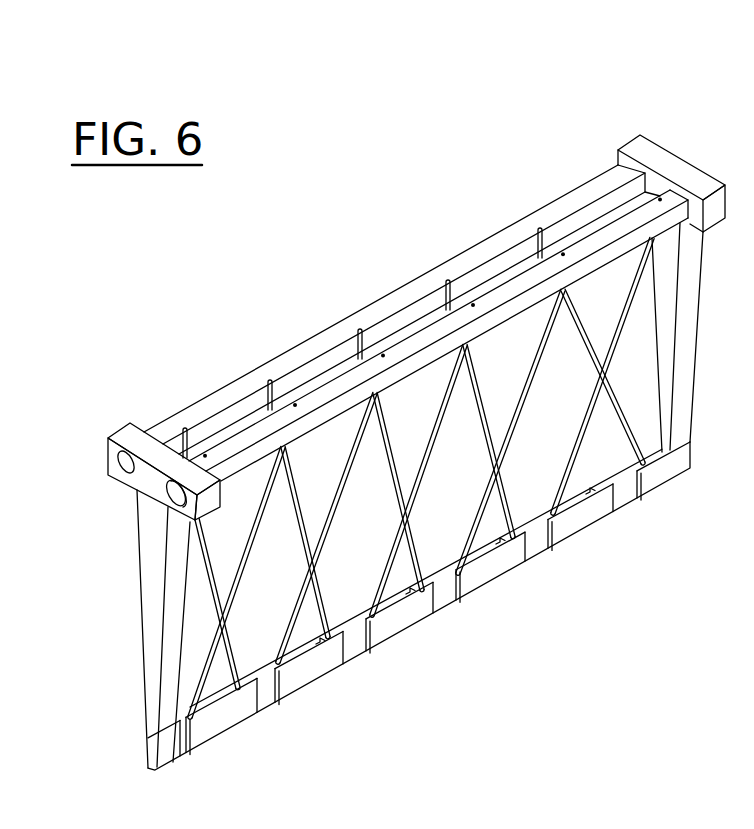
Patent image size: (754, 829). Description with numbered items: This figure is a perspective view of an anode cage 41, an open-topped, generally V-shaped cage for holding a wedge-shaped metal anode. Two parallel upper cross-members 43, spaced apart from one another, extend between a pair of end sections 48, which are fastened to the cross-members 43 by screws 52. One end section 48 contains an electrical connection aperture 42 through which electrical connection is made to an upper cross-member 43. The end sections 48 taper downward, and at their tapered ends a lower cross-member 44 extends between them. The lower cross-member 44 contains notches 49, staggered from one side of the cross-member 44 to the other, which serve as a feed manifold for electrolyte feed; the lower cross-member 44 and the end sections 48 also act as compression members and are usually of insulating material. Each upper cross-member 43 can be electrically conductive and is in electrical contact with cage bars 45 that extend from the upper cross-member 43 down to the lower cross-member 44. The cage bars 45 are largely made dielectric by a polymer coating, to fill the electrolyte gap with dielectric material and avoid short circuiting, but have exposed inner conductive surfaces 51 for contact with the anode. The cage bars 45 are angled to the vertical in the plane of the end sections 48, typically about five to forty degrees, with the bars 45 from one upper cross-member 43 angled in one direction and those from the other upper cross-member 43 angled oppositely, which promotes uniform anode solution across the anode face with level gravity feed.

The anode cage 41 is at (456, 142).
The electrical connection aperture 42 is at (152, 513).
The upper cross-member 43 is at (345, 332).
The lower cross-member 44 is at (498, 567).
The cage bar 45 is at (613, 483).
The end section 48 is at (153, 613).
The notch 49 is at (447, 593).
The exposed inner conductive surface 51 is at (481, 426).
The screw 52 is at (107, 464).